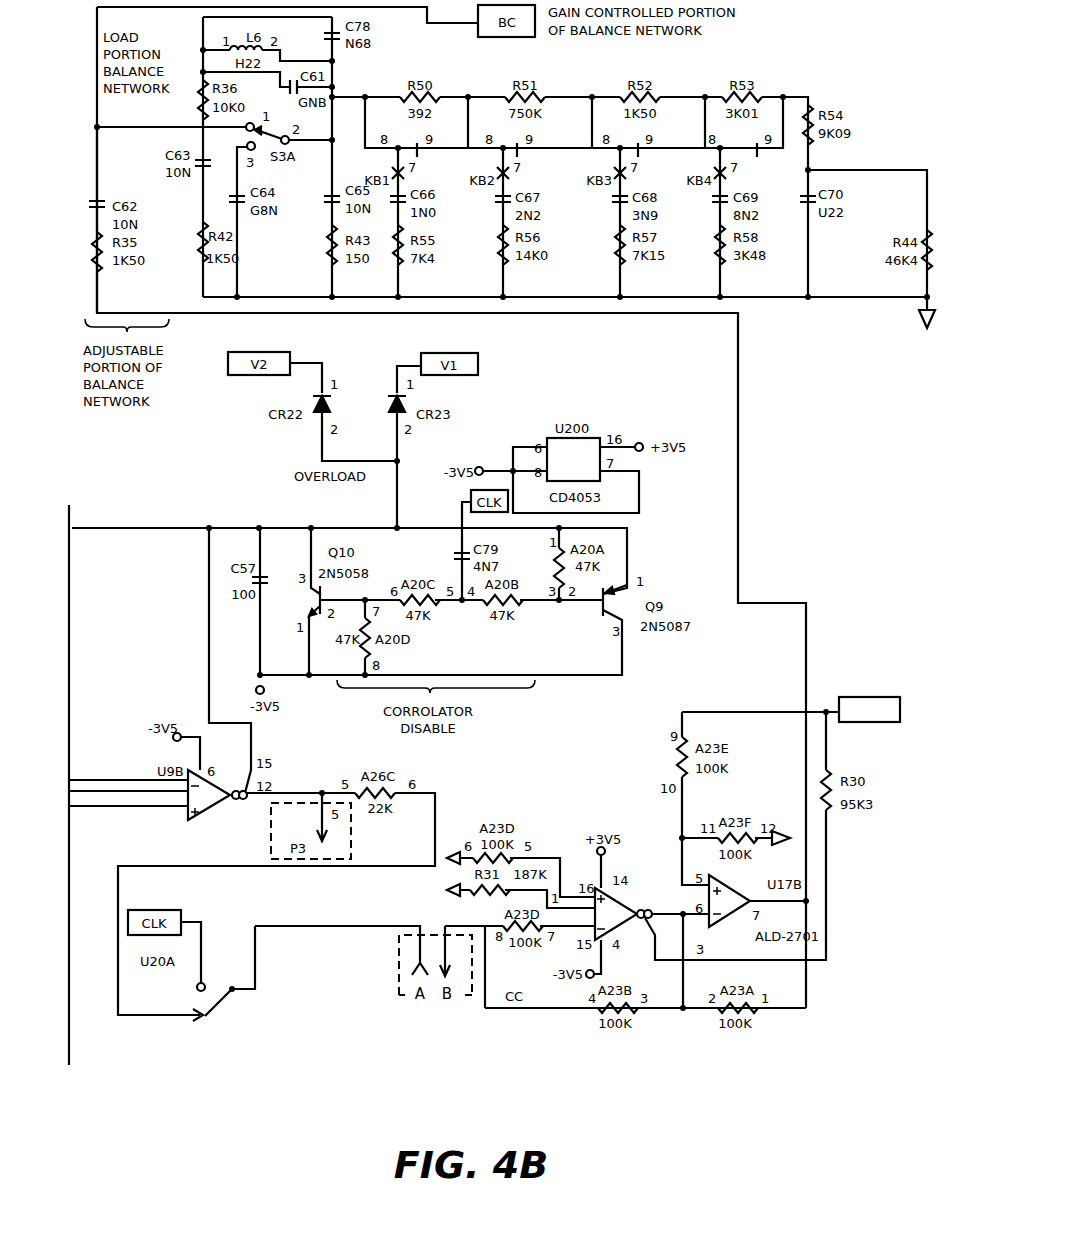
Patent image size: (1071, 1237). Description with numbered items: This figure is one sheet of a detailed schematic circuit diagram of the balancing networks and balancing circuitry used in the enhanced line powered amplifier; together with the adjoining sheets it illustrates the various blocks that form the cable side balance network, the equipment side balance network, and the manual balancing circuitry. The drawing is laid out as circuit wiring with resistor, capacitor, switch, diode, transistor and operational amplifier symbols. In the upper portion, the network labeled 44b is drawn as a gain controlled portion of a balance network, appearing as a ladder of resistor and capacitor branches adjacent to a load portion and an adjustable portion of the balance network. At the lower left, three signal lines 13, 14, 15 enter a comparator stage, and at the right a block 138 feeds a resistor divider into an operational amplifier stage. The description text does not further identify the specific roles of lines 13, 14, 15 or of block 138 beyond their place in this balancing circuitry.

The input signal line to comparator U9B 13 is at (140, 806).
The input signal line to comparator U9B 14 is at (118, 780).
The input signal line to comparator U9B 15 is at (100, 790).
The BC divide signal block 138 is at (837, 711).
The gain controlled portion of balance network 44b is at (606, 75).